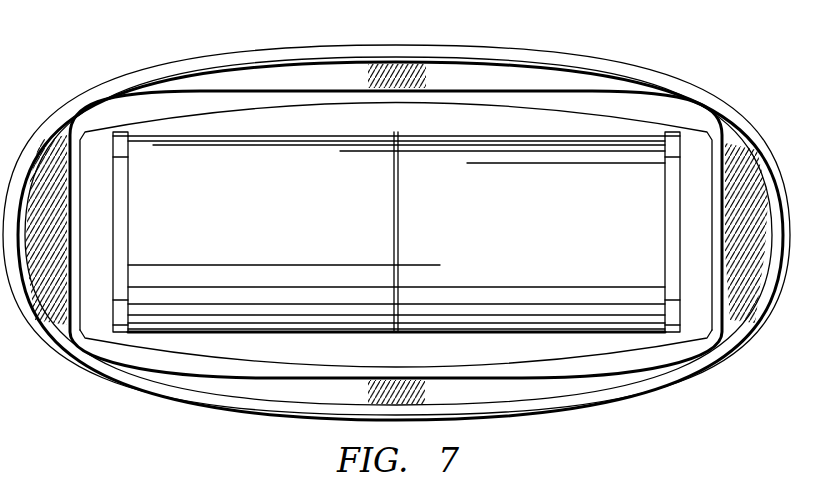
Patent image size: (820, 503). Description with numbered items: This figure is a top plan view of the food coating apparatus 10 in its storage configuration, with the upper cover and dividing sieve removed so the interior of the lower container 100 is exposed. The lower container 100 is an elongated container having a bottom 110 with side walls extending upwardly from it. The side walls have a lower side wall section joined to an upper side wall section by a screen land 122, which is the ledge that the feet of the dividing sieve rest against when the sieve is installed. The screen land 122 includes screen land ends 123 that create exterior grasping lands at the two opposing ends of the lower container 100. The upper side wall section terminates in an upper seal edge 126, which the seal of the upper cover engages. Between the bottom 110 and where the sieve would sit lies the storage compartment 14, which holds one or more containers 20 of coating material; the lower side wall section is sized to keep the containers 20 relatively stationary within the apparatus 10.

The coating apparatus 10 is at (90, 65).
The storage compartment 14 is at (337, 353).
The containers 20 is at (277, 247).
The lower container 100 is at (671, 406).
The bottom 110 is at (573, 353).
The screen land 122 is at (263, 392).
The screen land ends 123 is at (735, 142).
The upper seal edge 126 is at (673, 82).